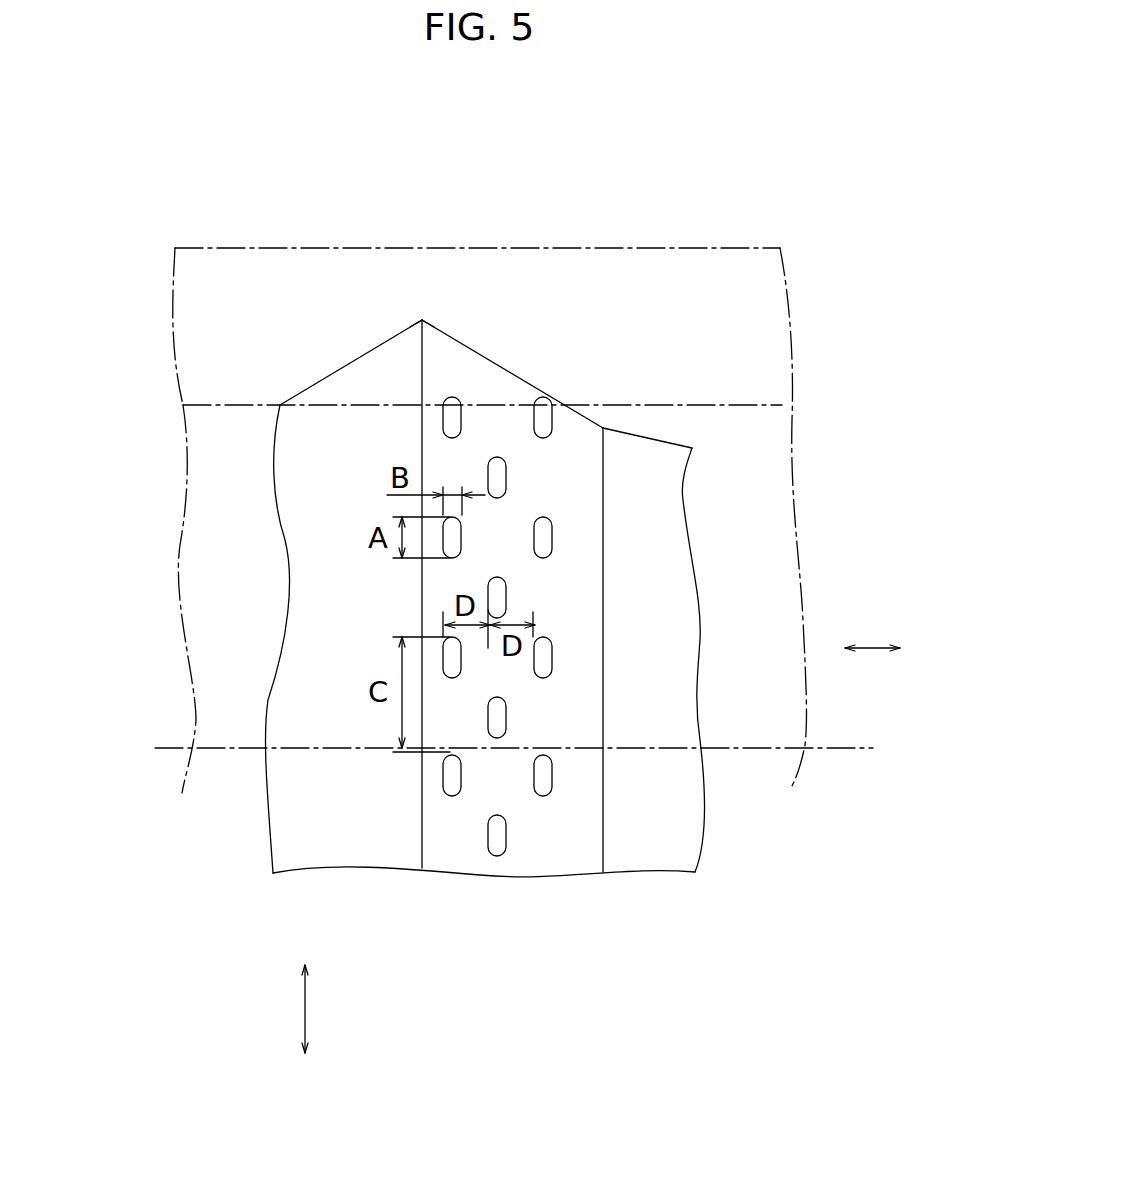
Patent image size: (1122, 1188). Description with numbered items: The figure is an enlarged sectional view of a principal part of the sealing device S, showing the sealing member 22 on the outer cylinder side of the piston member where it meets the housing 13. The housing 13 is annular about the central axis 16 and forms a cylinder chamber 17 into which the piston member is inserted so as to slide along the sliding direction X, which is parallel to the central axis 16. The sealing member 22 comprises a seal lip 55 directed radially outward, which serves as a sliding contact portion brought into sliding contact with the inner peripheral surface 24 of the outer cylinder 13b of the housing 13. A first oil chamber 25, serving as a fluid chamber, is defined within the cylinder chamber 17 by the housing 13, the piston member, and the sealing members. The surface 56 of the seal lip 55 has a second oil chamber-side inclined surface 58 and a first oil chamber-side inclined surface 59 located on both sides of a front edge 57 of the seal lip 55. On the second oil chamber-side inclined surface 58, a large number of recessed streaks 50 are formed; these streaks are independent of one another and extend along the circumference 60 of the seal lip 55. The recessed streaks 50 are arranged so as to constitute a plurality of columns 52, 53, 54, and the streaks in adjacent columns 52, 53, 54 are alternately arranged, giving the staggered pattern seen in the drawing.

The sealing device S is at (768, 223).
The housing 13 is at (738, 405).
The outer cylinder 13b is at (710, 418).
The central axis 16 is at (848, 745).
The cylinder chamber 17 is at (772, 722).
The sealing member 22 is at (463, 367).
The inner peripheral surface 24 is at (688, 418).
The first oil chamber 25 is at (205, 497).
The recessed streaks 50 is at (543, 681).
The column 52 is at (453, 787).
The column 53 is at (497, 848).
The column 54 is at (543, 787).
The seal lip 55 is at (438, 348).
The surface 56 is at (368, 427).
The front edge 57 is at (422, 348).
The second oil chamber-side inclined surface 58 is at (508, 387).
The first oil chamber-side inclined surface 59 is at (302, 427).
The circumference 60 is at (305, 1005).
The sliding direction X is at (876, 647).